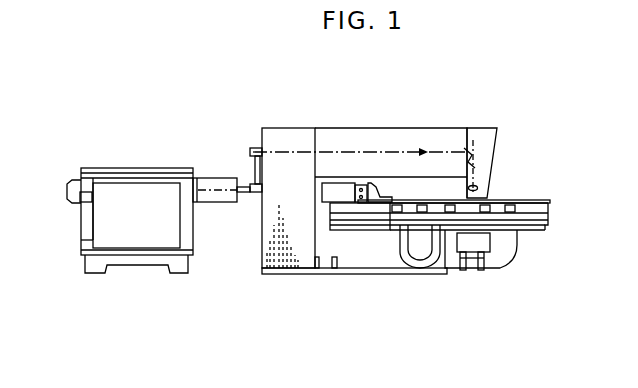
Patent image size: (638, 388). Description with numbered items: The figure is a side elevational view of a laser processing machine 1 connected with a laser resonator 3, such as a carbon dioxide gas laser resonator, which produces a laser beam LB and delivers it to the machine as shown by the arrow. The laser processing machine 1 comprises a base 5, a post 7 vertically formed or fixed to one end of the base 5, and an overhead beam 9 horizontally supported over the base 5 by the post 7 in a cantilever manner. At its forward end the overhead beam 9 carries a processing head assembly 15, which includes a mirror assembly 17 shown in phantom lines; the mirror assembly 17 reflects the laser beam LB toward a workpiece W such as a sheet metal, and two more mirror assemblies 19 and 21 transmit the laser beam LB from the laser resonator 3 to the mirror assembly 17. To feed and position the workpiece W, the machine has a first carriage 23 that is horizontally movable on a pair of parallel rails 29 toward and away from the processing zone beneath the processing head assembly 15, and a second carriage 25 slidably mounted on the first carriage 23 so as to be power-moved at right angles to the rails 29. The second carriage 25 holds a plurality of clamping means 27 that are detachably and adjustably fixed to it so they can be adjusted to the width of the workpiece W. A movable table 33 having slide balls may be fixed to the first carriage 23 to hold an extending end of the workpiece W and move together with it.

The laser processing machine 1 is at (251, 84).
The laser resonator 3 is at (139, 164).
The base 5 is at (368, 263).
The post 7 is at (262, 226).
The overhead beam 9 is at (327, 133).
The processing head assembly 15 is at (501, 129).
The mirror assembly 17 is at (477, 137).
The mirror assembly 19 is at (251, 149).
The mirror assembly 21 is at (252, 198).
The first carriage 23 is at (357, 212).
The second carriage 25 is at (323, 190).
The clamping means 27 is at (372, 190).
The rails 29 is at (450, 217).
The movable table 33 is at (378, 228).
The laser beam LB is at (407, 151).
The workpiece W is at (493, 200).